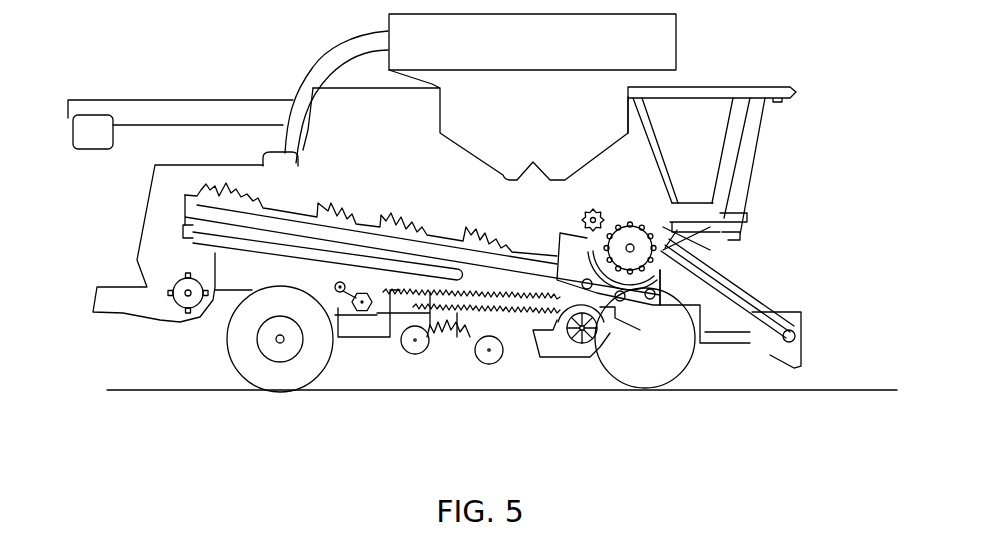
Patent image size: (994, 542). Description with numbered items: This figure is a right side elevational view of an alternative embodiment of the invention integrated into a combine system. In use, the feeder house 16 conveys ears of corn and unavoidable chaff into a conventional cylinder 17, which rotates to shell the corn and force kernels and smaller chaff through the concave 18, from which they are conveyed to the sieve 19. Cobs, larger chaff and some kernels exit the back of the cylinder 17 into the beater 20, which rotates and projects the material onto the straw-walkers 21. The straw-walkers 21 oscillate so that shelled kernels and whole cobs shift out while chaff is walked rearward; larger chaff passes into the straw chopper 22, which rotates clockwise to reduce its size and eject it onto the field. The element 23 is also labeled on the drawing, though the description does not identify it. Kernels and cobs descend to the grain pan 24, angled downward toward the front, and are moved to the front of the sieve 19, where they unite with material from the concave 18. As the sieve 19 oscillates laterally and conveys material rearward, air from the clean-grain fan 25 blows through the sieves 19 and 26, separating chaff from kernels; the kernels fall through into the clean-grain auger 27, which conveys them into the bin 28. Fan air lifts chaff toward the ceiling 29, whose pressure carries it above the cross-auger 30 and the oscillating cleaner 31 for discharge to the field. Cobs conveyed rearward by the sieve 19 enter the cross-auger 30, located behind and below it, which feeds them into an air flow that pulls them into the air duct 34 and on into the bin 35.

The feeder house 16 is at (757, 310).
The conventional cylinder 17 is at (643, 242).
The concave 18 is at (710, 236).
The sieve 19 is at (404, 352).
The beater 20 is at (600, 212).
The straw-walkers 21 is at (233, 222).
The straw chopper 22 is at (197, 303).
The sawtooth header fingers 23 is at (238, 187).
The grain pan 24 is at (197, 236).
The clean-grain fan 25 is at (598, 328).
The sieve 26 is at (440, 342).
The clean-grain auger 27 is at (503, 355).
The bin 28 is at (587, 115).
The ceiling 29 is at (336, 286).
The cross-auger 30 is at (350, 264).
The oscillating cleaner 31 is at (354, 309).
The air duct 34 is at (323, 68).
The bin 35 is at (647, 42).